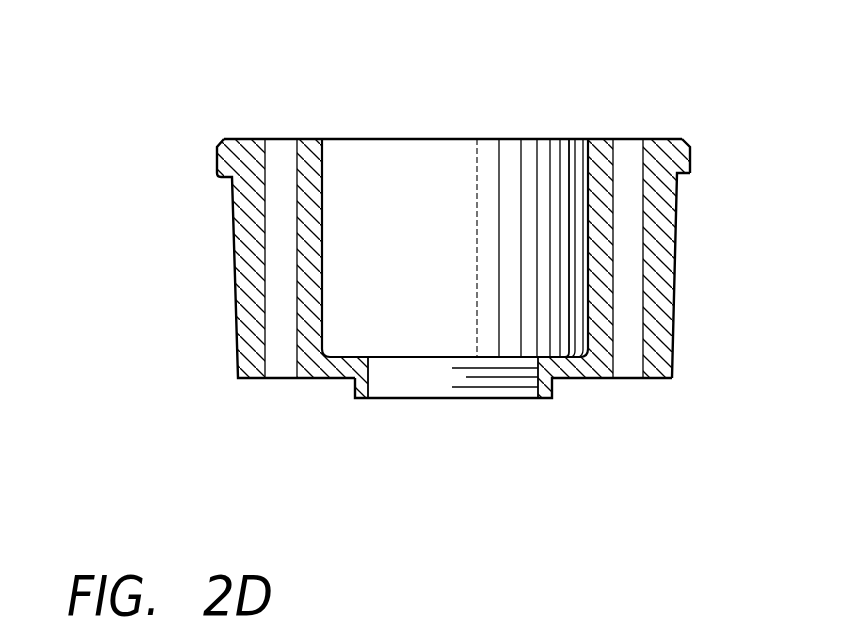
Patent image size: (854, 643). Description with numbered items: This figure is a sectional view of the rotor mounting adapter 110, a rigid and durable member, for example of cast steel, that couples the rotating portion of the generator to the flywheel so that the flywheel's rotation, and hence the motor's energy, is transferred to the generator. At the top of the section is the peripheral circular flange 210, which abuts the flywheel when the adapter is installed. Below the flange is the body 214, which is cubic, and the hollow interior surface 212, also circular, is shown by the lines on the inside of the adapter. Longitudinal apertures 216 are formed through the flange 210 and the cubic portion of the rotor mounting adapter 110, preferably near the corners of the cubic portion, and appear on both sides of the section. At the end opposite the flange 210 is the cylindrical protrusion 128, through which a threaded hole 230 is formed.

The rotor mounting adapter 110 is at (272, 122).
The cylindrical protrusion 128 is at (552, 381).
The peripheral circular flange 210 is at (690, 157).
The hollow interior surface 212 is at (576, 149).
The body 214 is at (673, 292).
The longitudinal apertures 216 is at (630, 146).
The threaded hole 230 is at (418, 392).